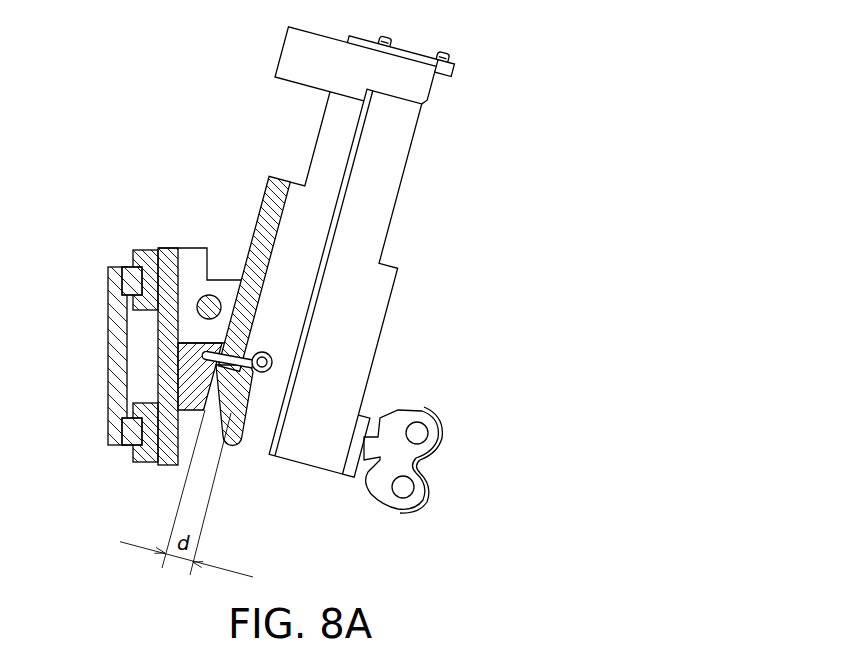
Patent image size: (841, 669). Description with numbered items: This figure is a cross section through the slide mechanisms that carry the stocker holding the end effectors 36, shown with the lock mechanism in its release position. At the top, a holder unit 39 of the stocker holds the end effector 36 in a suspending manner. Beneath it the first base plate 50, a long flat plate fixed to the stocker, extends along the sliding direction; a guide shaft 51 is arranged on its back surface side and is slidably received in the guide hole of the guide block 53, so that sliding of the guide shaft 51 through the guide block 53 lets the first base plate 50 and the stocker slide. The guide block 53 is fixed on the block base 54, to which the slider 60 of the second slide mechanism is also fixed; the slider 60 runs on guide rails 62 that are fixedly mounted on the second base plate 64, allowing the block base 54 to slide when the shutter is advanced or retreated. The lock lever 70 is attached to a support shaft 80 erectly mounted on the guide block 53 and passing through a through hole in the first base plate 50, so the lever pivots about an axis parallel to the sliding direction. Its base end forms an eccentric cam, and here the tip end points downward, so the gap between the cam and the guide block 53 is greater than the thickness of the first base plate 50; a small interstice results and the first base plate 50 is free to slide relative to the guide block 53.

The end effector 36 is at (375, 212).
The holder unit 39 is at (295, 57).
The first base plate 50 is at (271, 179).
The guide shaft 51 is at (213, 296).
The guide block 53 is at (190, 248).
The block base 54 is at (155, 375).
The slider 60 is at (145, 250).
The guide rail 62 is at (130, 267).
The second base plate 64 is at (110, 318).
The lock lever 70 is at (237, 425).
The support shaft 80 is at (272, 362).